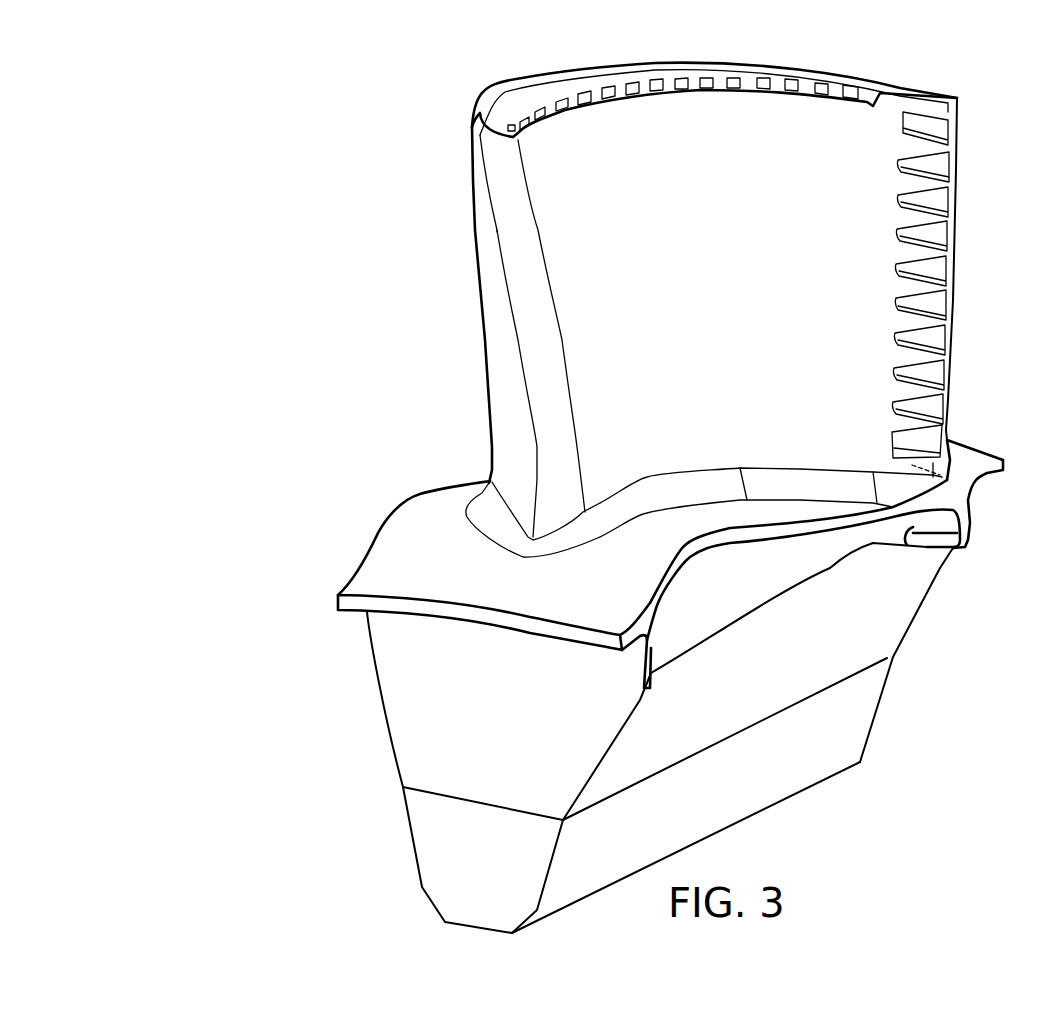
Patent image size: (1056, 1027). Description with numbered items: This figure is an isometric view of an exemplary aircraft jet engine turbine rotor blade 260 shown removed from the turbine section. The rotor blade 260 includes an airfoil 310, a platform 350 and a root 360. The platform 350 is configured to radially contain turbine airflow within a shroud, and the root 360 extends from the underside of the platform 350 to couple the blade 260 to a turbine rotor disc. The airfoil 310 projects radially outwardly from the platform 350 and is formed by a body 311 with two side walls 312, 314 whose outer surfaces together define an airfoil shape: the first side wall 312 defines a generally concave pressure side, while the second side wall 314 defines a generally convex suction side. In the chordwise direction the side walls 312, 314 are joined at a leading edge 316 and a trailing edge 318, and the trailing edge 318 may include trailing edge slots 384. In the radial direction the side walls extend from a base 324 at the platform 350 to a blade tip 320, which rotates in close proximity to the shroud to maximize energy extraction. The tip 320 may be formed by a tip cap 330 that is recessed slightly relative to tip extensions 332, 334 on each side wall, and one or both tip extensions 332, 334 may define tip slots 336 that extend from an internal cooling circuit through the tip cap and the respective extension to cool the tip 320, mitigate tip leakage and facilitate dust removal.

The rotor blade 260 is at (262, 268).
The airfoil 310 is at (474, 248).
The body 311 is at (467, 142).
The first side wall 312 is at (612, 163).
The second side wall 314 is at (488, 460).
The leading edge 316 is at (510, 354).
The trailing edge 318 is at (958, 135).
The blade tip 320 is at (479, 97).
The base 324 is at (645, 505).
The tip cap 330 is at (524, 103).
The tip extension 332 is at (645, 78).
The tip extension 334 is at (560, 76).
The tip slots 336 is at (708, 82).
The platform 350 is at (365, 553).
The root 360 is at (372, 715).
The trailing edge slots 384 is at (942, 302).